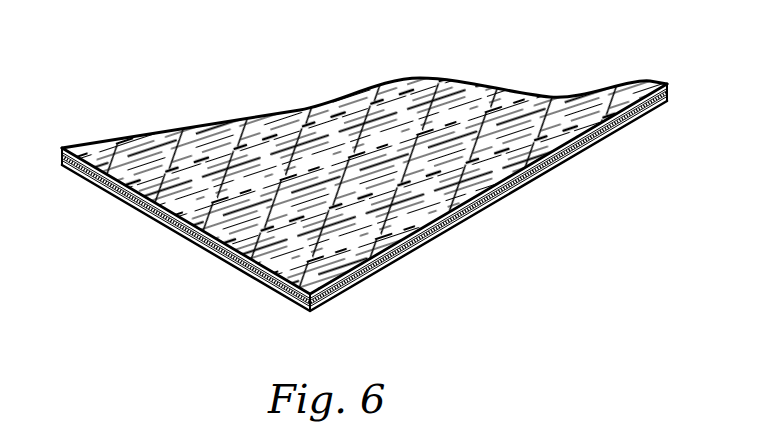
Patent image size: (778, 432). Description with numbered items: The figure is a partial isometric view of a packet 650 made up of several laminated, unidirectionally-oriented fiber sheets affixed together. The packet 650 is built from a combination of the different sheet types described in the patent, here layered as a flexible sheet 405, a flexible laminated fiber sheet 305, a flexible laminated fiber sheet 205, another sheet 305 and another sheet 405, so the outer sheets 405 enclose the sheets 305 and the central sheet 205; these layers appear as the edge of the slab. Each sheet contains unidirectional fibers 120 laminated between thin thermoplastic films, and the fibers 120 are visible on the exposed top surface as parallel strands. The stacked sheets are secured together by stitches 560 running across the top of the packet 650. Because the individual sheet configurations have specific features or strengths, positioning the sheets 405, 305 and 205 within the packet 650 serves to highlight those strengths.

The packet 650 is at (365, 183).
The stitches 560 is at (310, 113).
The unidirectional fibers 120 is at (529, 115).
The flexible sheet 405 is at (592, 134).
The flexible laminated unidirectionally-oriented fiber sheet 305 is at (578, 145).
The flexible laminated unidirectionally-oriented fiber sheet 205 is at (565, 155).